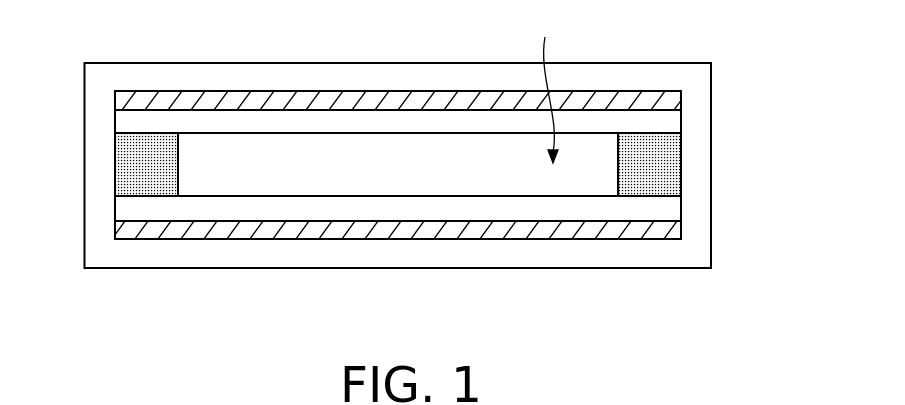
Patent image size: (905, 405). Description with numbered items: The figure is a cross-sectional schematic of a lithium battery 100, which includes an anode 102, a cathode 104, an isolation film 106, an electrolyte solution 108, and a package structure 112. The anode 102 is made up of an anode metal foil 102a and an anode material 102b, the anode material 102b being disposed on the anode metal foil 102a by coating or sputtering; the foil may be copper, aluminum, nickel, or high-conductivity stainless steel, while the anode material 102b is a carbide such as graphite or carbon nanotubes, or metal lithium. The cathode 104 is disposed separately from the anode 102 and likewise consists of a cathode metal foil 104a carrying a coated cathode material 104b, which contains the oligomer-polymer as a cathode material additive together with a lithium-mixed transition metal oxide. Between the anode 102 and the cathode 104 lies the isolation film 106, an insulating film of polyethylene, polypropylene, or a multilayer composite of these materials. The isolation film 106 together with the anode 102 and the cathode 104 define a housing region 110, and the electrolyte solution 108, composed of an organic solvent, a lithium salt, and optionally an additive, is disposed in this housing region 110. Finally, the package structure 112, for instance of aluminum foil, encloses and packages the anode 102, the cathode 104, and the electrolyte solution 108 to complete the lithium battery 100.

The lithium battery 100 is at (838, 345).
The anode 102 is at (483, 234).
The anode metal foil 102a is at (675, 233).
The anode material 102b is at (675, 205).
The cathode 104 is at (485, 98).
The cathode metal foil 104a is at (675, 103).
The cathode material 104b is at (675, 125).
The isolation film 106 is at (121, 173).
The electrolyte solution 108 is at (388, 163).
The housing region 110 is at (541, 86).
The package structure 112 is at (652, 80).